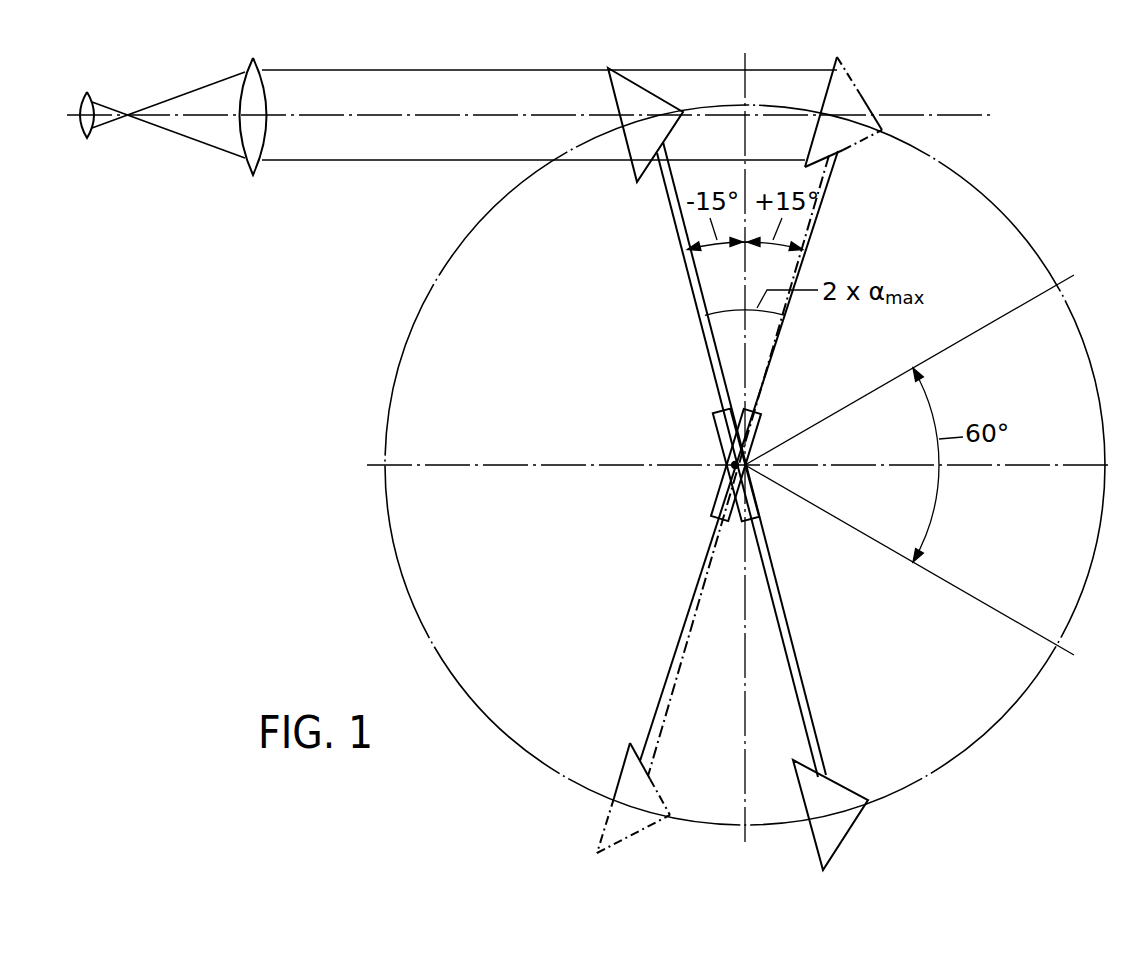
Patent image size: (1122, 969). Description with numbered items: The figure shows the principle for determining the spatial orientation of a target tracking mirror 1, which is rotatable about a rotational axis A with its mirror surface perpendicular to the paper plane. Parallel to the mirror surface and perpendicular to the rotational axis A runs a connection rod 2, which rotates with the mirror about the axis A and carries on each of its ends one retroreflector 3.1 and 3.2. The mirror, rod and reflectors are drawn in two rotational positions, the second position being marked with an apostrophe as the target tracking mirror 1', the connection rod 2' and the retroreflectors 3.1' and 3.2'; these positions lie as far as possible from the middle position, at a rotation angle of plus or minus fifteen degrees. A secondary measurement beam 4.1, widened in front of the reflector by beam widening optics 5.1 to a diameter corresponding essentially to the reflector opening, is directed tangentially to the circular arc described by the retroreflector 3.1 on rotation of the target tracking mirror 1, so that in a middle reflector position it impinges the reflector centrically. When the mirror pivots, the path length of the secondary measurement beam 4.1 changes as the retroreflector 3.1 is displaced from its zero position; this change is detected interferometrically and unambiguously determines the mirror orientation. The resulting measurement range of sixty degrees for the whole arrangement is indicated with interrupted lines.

The target tracking mirror 1 is at (762, 472).
The target tracking mirror in second rotational position 1' is at (705, 468).
The connection rod 2 is at (730, 459).
The connection rod in second rotational position 2' is at (751, 463).
The retroreflector 3.1 is at (650, 104).
The retroreflector in second rotational position 3.1' is at (862, 97).
The retroreflector 3.2 is at (846, 801).
The retroreflector in second rotational position 3.2' is at (613, 790).
The secondary measurement beam 4.1 is at (399, 97).
The beam widening optics 5.1 is at (190, 70).
The rotational axis A is at (704, 447).